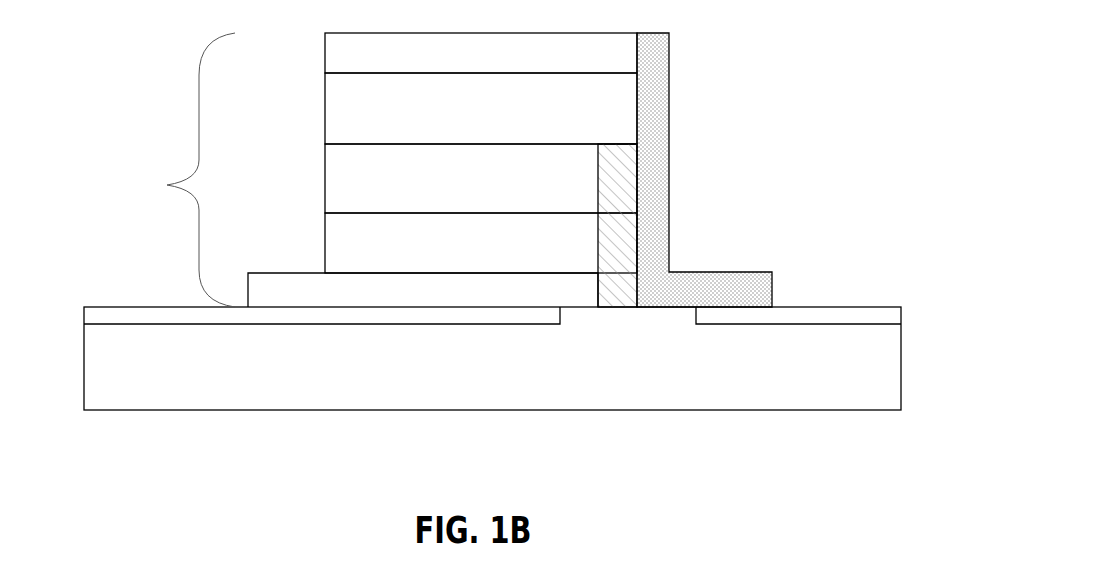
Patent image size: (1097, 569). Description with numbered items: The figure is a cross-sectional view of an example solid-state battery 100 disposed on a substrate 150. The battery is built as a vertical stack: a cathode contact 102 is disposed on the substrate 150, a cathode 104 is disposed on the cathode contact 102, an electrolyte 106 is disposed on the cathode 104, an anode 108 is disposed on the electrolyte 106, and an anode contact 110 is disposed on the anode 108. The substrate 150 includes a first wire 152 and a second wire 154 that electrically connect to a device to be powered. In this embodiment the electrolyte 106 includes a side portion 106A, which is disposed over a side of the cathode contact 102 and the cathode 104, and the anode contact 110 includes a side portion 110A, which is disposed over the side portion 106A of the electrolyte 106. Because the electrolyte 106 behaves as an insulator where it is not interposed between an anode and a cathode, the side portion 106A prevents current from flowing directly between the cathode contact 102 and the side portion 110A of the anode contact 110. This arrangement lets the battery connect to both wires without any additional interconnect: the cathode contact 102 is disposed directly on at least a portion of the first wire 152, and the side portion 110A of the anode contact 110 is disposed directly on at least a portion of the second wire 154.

The solid-state battery 100 is at (175, 170).
The cathode contact 102 is at (398, 299).
The cathode 104 is at (468, 256).
The electrolyte 106 is at (468, 186).
The anode 108 is at (468, 115).
The anode contact 110 is at (468, 61).
The side portion of electrolyte 106A is at (620, 222).
The side portion of anode contact 110A is at (655, 103).
The substrate 150 is at (472, 369).
The first wire 152 is at (197, 317).
The second wire 154 is at (860, 316).